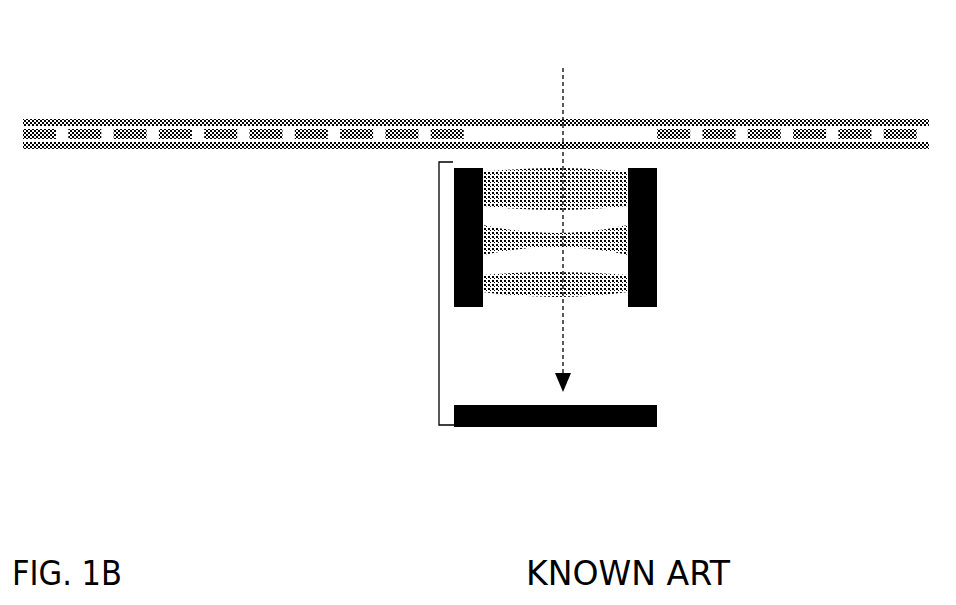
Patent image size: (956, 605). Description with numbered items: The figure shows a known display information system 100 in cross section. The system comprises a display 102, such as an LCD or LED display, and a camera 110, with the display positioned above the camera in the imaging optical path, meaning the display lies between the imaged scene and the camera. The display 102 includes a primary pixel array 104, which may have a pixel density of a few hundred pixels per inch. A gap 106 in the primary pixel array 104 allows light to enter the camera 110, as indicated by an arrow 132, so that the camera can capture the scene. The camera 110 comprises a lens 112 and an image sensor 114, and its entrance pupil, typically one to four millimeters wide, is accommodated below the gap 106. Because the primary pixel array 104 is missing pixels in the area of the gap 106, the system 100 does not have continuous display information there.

The display information system 100 is at (159, 58).
The display 102 is at (150, 118).
The primary pixel array 104 is at (230, 147).
The gap 106 is at (498, 127).
The camera 110 is at (562, 293).
The lens 112 is at (657, 220).
The image sensor 114 is at (657, 425).
The arrow 132 is at (565, 72).